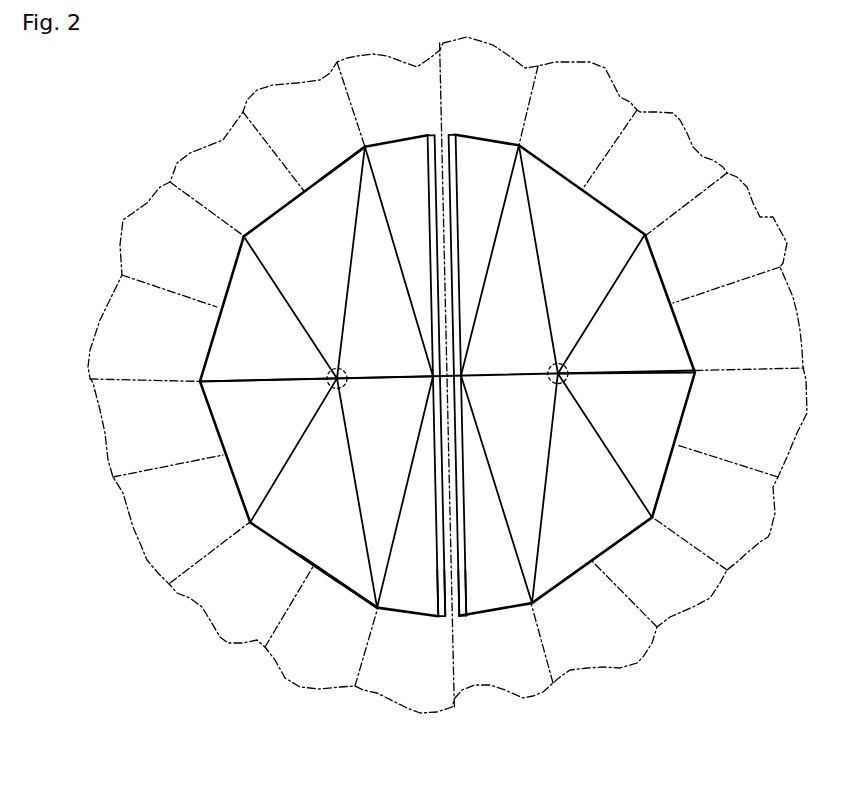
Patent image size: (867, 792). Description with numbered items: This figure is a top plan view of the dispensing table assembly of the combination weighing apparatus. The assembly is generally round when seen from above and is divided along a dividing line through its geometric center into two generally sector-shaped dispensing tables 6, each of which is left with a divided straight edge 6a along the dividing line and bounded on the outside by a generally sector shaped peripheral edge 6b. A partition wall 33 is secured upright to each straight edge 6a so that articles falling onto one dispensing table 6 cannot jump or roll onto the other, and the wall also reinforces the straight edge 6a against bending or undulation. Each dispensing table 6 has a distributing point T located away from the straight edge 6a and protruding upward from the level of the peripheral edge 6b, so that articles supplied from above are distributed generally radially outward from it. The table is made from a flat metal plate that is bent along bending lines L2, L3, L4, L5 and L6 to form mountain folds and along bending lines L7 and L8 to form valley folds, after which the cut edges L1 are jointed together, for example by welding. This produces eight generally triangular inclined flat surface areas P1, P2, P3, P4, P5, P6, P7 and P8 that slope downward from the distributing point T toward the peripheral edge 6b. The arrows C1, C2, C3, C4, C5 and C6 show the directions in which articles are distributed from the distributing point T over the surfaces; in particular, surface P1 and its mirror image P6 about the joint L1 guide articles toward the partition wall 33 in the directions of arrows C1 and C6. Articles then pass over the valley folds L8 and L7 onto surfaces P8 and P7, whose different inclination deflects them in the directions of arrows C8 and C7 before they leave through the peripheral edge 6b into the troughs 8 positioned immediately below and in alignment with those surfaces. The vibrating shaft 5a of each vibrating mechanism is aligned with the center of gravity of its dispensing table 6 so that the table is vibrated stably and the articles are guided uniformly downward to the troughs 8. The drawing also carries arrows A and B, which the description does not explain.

The trough 8 is at (523, 705).
The dispensing table 6 is at (439, 377).
The divided straight edge 6a is at (470, 590).
The sector shaped peripheral edge 6b is at (338, 578).
The partition wall 33 is at (441, 378).
The vibrating shaft 5a is at (568, 379).
The distributing point T is at (447, 374).
The inclined flat surface area P1 is at (368, 580).
The inclined flat surface area P2 is at (288, 546).
The inclined flat surface area P3 is at (222, 418).
The inclined flat surface area P4 is at (213, 348).
The inclined flat surface area P5 is at (278, 220).
The inclined flat surface area P6 is at (360, 188).
The inclined flat surface area P7 is at (388, 153).
The inclined flat surface area P8 is at (398, 605).
The cut edge L1 is at (390, 374).
The bending line L2 is at (358, 478).
The bending line L3 is at (282, 474).
The bending line L4 is at (270, 378).
The bending line L5 is at (281, 303).
The bending line L6 is at (356, 276).
The bending line L7 is at (387, 228).
The bending line L8 is at (394, 540).
The arrow C1 is at (396, 430).
The arrow C2 is at (324, 474).
The arrow C3 is at (290, 410).
The arrow C4 is at (288, 353).
The arrow C5 is at (313, 288).
The arrow C6 is at (383, 318).
The arrow C7 is at (414, 167).
The arrow C8 is at (431, 576).
The view direction A is at (443, 732).
The view direction B is at (48, 379).